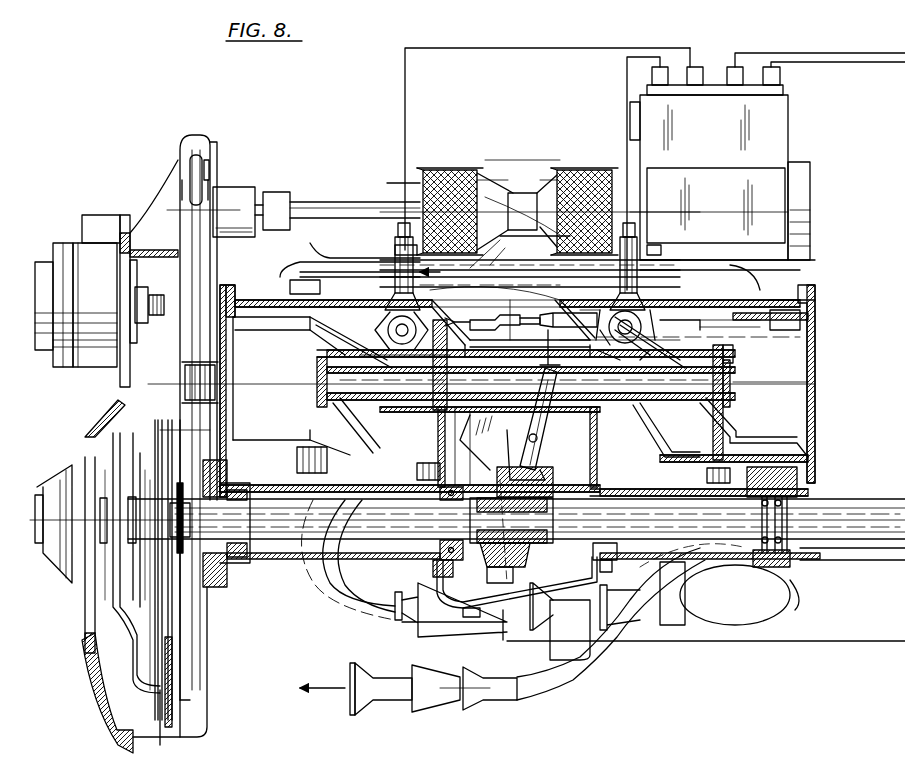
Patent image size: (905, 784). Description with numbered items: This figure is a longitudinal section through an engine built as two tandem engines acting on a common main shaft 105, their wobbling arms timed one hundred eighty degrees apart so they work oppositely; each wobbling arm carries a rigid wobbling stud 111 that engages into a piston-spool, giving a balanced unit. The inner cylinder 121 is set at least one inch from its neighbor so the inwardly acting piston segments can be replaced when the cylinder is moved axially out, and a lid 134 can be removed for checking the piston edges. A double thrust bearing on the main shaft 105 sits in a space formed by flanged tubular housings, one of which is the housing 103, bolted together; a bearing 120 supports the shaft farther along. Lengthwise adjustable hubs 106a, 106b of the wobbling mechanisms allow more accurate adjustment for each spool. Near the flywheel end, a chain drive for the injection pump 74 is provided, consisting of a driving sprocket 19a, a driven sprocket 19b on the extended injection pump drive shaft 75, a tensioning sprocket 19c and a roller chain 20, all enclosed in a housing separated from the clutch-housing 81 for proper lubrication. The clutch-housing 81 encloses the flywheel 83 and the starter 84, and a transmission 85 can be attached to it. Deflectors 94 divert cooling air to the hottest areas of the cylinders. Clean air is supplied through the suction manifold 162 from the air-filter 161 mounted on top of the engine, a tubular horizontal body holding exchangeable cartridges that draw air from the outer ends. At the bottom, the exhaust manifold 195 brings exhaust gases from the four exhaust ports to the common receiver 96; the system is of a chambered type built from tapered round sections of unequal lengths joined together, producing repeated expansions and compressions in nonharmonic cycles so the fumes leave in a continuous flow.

The driving sprocket 19a is at (246, 503).
The driven sprocket 19b is at (193, 160).
The tensioning sprocket 19c is at (250, 388).
The roller chain 20 is at (222, 440).
The injection pump 74 is at (647, 113).
The injection pump drive shaft 75 is at (358, 190).
The clutch-housing 81 is at (200, 725).
The flywheel 83 is at (195, 660).
The starter 84 is at (165, 285).
The transmission 85 is at (58, 583).
The deflectors 94 is at (470, 322).
The common receiver 96 is at (768, 625).
The flanged tubular housing 103 is at (700, 490).
The main shaft 105 is at (630, 518).
The hub of wobbling-mechanism 106a is at (527, 547).
The hub of wobbling-mechanism 106b is at (525, 580).
The rigid wobbling stud 111 is at (520, 430).
The bearing 120 is at (763, 499).
The inner cylinder 121 is at (705, 345).
The end chamber 134 is at (793, 426).
The air-filter 161 is at (475, 178).
The suction manifold 162 is at (288, 278).
The exhaust manifold 195 is at (365, 595).